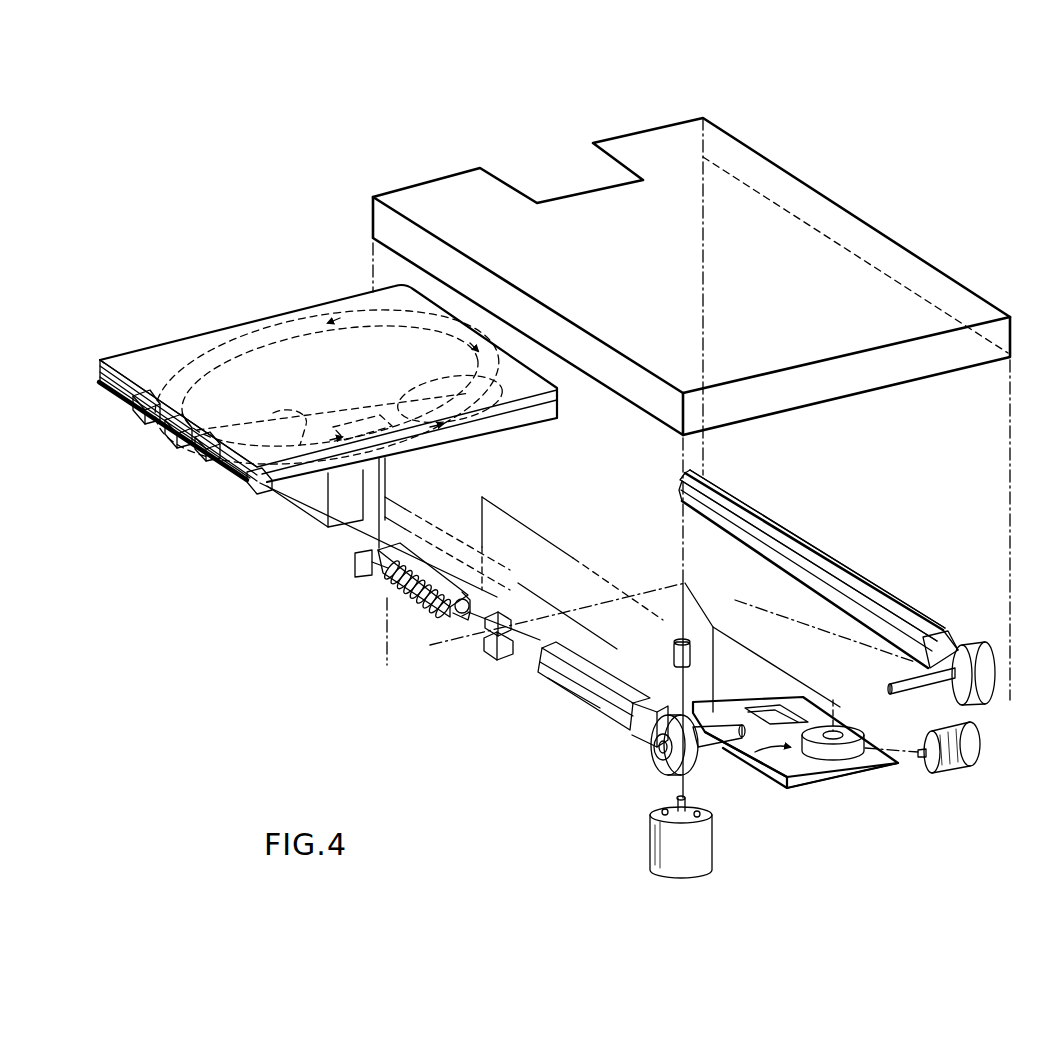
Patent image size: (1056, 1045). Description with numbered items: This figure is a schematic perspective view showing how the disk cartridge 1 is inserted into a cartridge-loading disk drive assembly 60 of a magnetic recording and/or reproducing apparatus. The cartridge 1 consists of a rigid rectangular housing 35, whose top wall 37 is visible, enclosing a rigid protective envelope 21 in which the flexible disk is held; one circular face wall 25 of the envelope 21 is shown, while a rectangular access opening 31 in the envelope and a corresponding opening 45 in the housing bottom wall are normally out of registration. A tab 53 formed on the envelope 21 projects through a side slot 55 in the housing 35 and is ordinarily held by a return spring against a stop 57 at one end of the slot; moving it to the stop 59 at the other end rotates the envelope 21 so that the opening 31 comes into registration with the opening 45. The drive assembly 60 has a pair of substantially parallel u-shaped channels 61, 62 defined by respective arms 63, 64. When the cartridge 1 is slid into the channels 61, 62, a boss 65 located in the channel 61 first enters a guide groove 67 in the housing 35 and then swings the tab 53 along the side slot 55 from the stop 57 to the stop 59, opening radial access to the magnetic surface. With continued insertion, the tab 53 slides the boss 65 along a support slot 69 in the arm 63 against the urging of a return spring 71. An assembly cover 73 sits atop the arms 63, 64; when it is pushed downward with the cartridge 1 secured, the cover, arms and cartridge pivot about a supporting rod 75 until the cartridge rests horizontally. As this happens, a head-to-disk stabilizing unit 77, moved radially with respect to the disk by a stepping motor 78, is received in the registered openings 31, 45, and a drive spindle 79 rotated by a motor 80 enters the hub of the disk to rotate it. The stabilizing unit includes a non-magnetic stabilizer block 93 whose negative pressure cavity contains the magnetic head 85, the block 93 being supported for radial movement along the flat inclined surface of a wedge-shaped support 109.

The disk cartridge 1 is at (96, 361).
The protective envelope 21 is at (447, 312).
The face wall 25 is at (458, 326).
The access opening 31 is at (556, 409).
The housing 35 is at (266, 316).
The top wall 37 is at (158, 353).
The opening 45 is at (376, 406).
The tab 53 is at (197, 445).
The side slot 55 is at (157, 427).
The stop 57 is at (218, 455).
The stop 59 is at (145, 415).
The cartridge-loading disk drive assembly 60 is at (911, 598).
The u-shaped channel 61 is at (516, 658).
The u-shaped channel 62 is at (762, 503).
The arm 63 is at (615, 725).
The arm 64 is at (748, 510).
The boss 65 is at (500, 593).
The guide groove 67 is at (240, 484).
The support slot 69 is at (577, 698).
The return spring 71 is at (440, 622).
The assembly cover 73 is at (863, 247).
The supporting rod 75 is at (700, 750).
The head-to-disk stabilizing unit 77 is at (768, 775).
The stepping motor 78 is at (982, 762).
The drive spindle 79 is at (670, 660).
The motor 80 is at (648, 870).
The magnetic head 85 is at (850, 726).
The stabilizer block 93 is at (881, 768).
The wedge-shaped support 109 is at (790, 789).